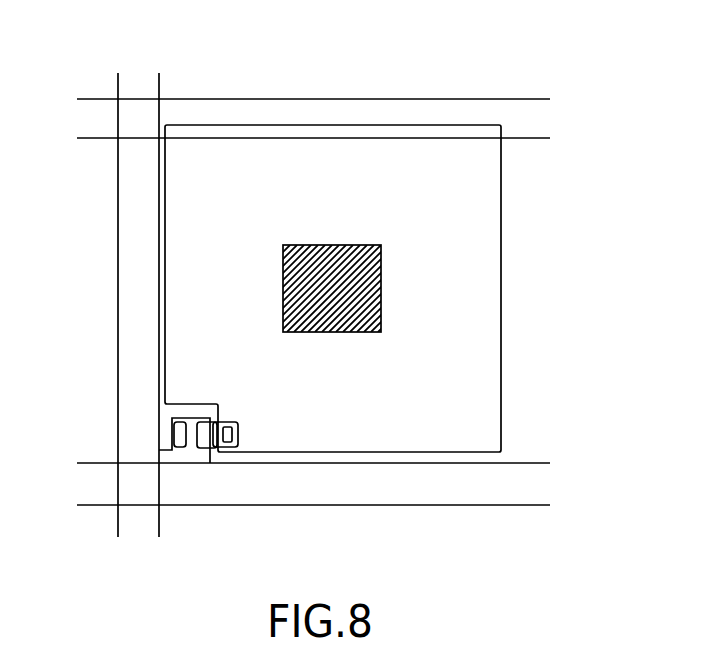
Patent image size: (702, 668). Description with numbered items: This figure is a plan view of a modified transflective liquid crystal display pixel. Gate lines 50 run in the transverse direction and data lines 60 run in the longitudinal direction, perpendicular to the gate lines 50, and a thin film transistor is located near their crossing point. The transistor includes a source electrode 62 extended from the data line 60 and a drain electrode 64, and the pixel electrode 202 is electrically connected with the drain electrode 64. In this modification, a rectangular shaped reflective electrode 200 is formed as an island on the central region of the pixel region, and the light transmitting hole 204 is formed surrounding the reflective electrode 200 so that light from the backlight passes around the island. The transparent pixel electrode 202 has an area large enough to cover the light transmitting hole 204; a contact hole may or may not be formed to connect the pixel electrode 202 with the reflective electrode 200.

The gate line 50 is at (392, 492).
The data line 60 is at (131, 251).
The source electrode 62 is at (160, 437).
The drain electrode 64 is at (211, 444).
The reflective electrode 200 is at (337, 245).
The pixel electrode 202 is at (501, 218).
The light transmitting hole 204 is at (471, 277).